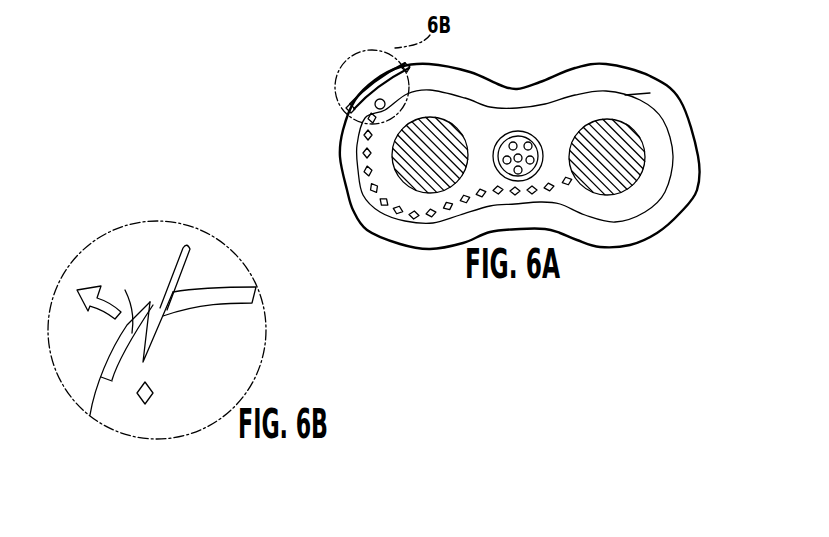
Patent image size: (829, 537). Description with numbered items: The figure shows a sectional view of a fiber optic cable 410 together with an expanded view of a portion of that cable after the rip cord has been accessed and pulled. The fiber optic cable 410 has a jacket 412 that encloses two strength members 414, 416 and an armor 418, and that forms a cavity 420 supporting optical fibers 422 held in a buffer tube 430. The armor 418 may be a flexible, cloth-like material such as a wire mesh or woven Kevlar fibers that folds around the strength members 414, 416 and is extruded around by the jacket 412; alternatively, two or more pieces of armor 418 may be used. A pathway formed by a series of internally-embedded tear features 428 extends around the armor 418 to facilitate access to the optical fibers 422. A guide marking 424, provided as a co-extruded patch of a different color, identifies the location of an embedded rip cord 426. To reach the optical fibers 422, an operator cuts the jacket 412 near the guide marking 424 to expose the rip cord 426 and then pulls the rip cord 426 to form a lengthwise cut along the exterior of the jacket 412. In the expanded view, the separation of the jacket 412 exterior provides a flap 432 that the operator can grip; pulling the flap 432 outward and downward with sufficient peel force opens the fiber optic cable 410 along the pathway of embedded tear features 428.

In FIG. 6A, the fiber optic cable 410 is at (214, 132).
In FIG. 6A, the jacket 412 is at (650, 94).
In FIG. 6A, the strength member 414 is at (620, 153).
In FIG. 6A, the strength member 416 is at (447, 148).
In FIG. 6A, the armor 418 is at (660, 197).
In FIG. 6A, the cavity 420 is at (517, 143).
In FIG. 6A, the optical fibers 422 is at (540, 136).
In FIG. 6A, the guide marking 424 is at (377, 80).
In FIG. 6B, the guide marking 424 is at (215, 296).
In FIG. 6A, the rip cord 426 is at (375, 105).
In FIG. 6B, the rip cord 426 is at (175, 280).
In FIG. 6A, the tear features 428 is at (368, 187).
In FIG. 6B, the tear features 428 is at (153, 390).
In FIG. 6A, the buffer tube 430 is at (650, 116).
In FIG. 6B, the flap 432 is at (125, 290).